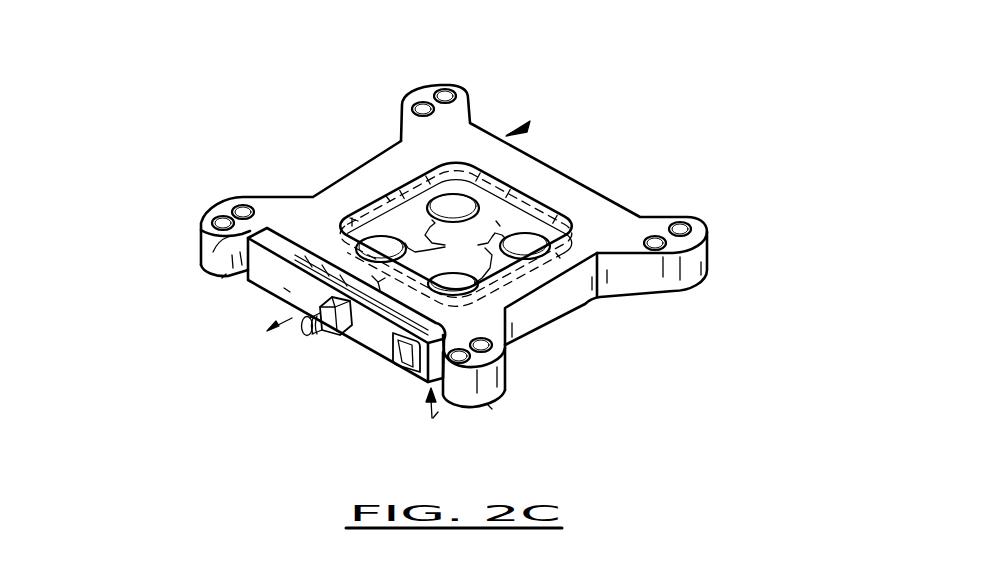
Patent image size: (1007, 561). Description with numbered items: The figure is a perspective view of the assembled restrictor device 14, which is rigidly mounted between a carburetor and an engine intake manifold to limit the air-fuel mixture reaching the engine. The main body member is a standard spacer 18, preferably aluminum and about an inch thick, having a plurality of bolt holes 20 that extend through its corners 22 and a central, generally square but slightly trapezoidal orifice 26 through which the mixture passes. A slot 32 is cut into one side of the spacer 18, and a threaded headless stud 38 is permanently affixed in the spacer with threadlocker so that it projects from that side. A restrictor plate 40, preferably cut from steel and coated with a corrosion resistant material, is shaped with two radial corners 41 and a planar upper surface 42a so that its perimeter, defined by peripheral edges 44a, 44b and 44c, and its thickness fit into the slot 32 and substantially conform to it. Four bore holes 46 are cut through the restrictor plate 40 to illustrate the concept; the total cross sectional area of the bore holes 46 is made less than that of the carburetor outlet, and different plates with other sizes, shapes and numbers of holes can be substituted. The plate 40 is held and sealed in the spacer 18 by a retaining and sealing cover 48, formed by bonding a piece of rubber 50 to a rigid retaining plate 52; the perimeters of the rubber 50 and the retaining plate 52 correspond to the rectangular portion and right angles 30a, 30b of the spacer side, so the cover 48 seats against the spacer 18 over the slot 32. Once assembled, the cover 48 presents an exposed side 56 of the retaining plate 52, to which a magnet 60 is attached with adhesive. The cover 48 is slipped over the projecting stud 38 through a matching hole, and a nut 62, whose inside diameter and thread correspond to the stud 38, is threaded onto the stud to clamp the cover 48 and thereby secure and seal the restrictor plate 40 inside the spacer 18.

The restrictor device 14 is at (517, 130).
The spacer 18 is at (313, 198).
The bolt holes 20 is at (432, 85).
The corners 22 is at (466, 90).
The central orifice 26 is at (404, 198).
The first right angle of side 30a is at (226, 274).
The second right angle of side 30b is at (488, 405).
The slot 32 is at (358, 208).
The stud 38 is at (371, 242).
The restrictor plate 40 is at (543, 197).
The radial corners 41 is at (422, 176).
The planar upper surface 42a is at (380, 207).
The peripheral edge 44a is at (388, 198).
The peripheral edge 44b is at (498, 223).
The peripheral edge 44c is at (558, 255).
The bore holes 46 is at (455, 251).
The retaining and sealing cover 48 is at (438, 412).
The rubber 50 is at (250, 282).
The retaining plate 52 is at (378, 354).
The exposed side of retaining plate 56 is at (284, 288).
The magnet 60 is at (403, 367).
The nut 62 is at (343, 333).